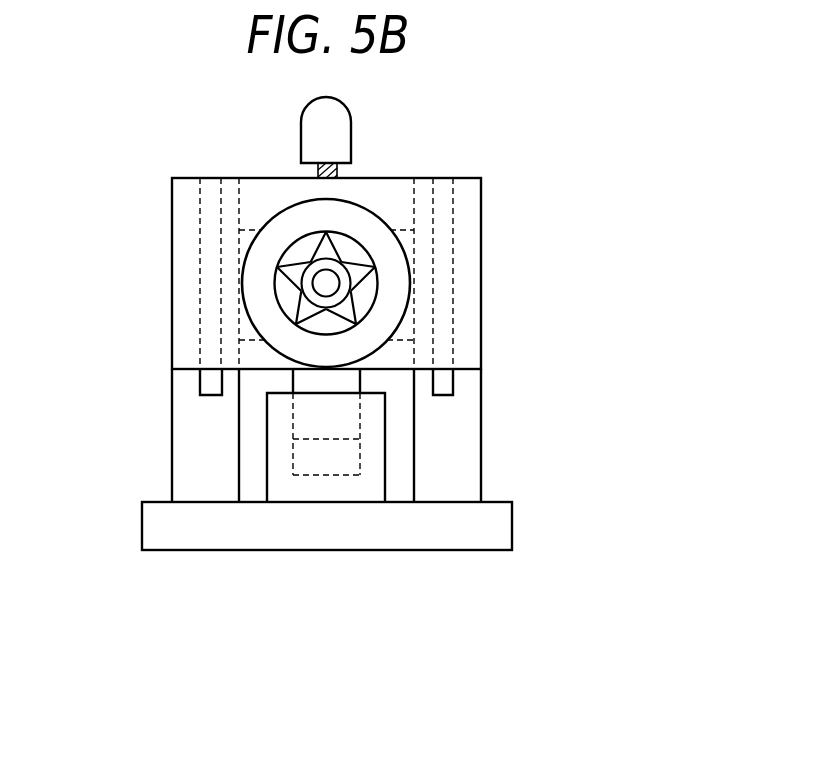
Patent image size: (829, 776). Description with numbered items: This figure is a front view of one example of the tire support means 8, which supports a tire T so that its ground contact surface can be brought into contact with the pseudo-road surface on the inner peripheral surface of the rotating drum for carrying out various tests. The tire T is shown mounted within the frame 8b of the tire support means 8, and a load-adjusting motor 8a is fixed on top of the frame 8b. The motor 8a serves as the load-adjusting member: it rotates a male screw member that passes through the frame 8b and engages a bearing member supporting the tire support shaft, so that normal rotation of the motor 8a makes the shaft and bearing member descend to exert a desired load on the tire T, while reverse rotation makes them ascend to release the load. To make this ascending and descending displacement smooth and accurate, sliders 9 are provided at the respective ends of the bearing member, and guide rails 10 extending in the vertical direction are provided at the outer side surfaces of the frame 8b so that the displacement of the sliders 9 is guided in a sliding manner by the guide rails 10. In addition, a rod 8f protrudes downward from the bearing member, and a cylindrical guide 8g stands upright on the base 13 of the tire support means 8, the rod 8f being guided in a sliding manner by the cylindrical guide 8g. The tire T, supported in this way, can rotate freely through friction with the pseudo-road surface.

The tire support means 8 is at (305, 335).
The load-adjusting motor 8a is at (316, 121).
The frame 8b is at (298, 435).
The rod 8f is at (307, 383).
The cylindrical guide 8g is at (332, 490).
The slider 9 is at (471, 323).
The guide rail 10 is at (205, 383).
The base 13 is at (487, 525).
The tire T is at (388, 258).